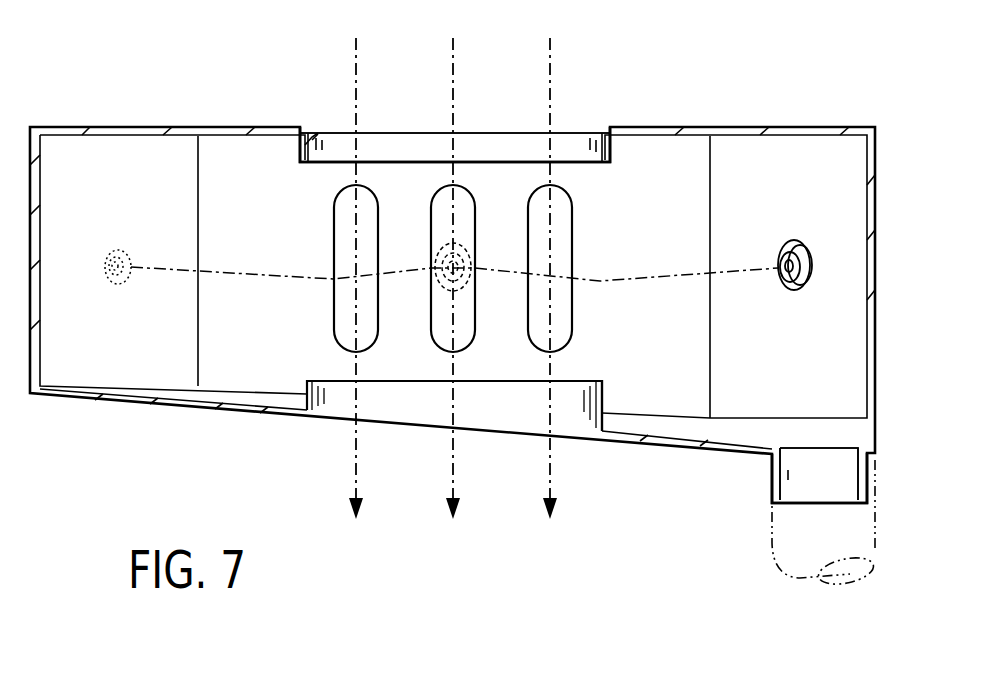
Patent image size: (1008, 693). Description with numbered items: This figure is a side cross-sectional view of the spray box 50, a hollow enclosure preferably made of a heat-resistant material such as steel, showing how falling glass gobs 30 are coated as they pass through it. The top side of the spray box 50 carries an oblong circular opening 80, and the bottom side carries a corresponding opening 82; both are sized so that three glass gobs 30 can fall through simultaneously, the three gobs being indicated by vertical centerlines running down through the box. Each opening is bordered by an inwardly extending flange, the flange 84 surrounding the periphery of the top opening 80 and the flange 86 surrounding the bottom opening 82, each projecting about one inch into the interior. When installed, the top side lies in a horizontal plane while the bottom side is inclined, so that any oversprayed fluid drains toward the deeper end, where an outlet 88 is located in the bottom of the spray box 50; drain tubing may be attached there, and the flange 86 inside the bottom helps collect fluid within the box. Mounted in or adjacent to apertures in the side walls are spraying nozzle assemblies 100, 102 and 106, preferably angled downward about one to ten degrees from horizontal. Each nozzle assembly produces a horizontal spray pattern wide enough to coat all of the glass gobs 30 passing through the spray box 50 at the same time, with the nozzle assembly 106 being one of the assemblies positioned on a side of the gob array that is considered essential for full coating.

The glass gobs 30 is at (528, 330).
The spray box 50 is at (114, 408).
The opening 80 is at (306, 150).
The opening 82 is at (337, 412).
The inwardly extending flange 84 is at (486, 165).
The inwardly extending flange 86 is at (550, 377).
The outlet 88 is at (773, 480).
The spraying nozzle assembly 100 is at (118, 262).
The spraying nozzle assembly 102 is at (798, 258).
The spraying nozzle assembly 106 is at (434, 264).